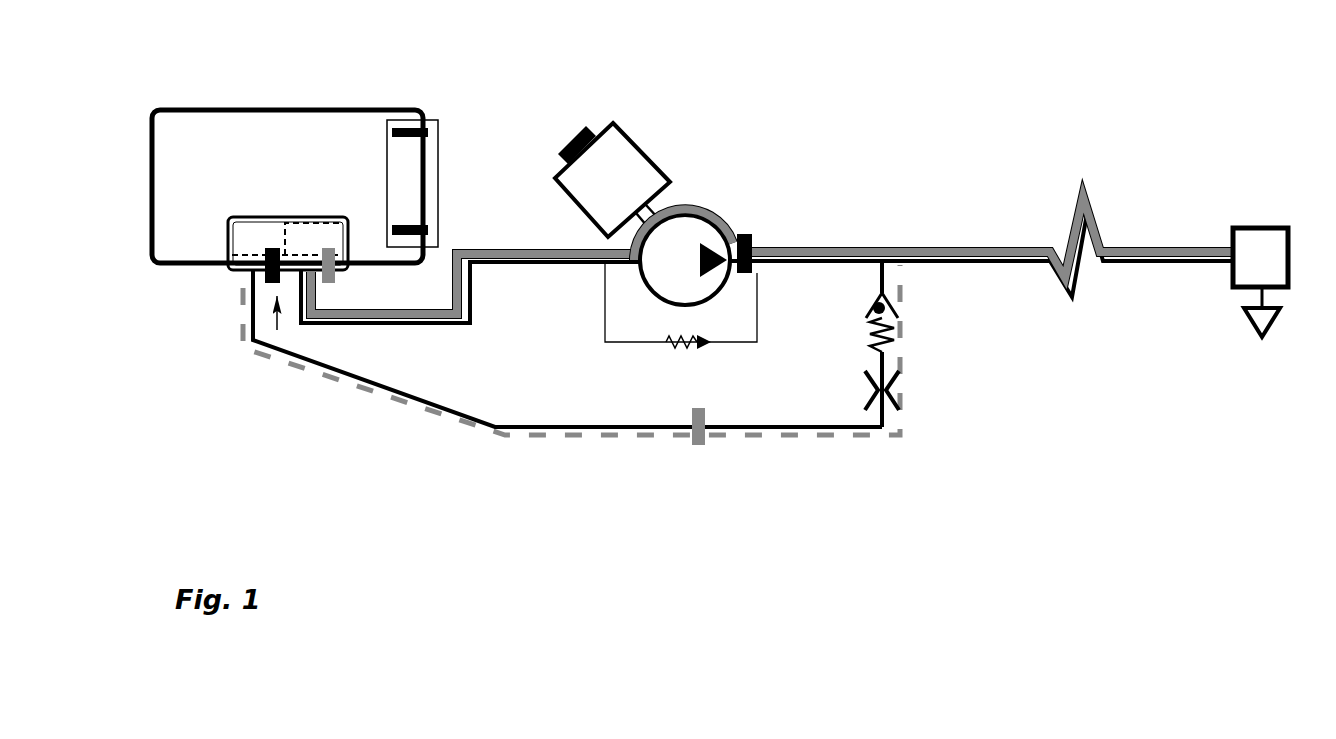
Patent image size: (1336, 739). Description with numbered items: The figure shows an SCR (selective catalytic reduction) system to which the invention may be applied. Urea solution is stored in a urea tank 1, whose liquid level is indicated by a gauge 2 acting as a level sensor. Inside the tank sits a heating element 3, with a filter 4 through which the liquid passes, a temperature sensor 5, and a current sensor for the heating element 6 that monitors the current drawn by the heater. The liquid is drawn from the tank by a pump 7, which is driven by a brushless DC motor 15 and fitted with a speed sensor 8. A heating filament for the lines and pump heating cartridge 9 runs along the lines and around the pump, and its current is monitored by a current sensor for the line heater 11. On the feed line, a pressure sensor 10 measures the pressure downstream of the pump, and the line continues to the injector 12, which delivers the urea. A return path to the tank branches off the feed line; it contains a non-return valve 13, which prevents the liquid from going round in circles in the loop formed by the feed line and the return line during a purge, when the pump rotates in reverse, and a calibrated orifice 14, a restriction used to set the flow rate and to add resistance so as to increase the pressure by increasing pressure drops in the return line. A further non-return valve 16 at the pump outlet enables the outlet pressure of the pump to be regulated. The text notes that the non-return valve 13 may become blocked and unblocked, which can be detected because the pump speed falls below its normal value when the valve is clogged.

The urea tank 1 is at (265, 110).
The gauge 2 is at (442, 198).
The heating element 3 is at (340, 240).
The filter 4 is at (283, 233).
The temperature sensor 5 is at (243, 347).
The current sensor for the heating element 6 is at (337, 280).
The pump 7 is at (718, 290).
The speed sensor 8 is at (590, 116).
The heating filament for the lines and pump heating cartridge 9 is at (737, 220).
The pressure sensor 10 is at (755, 237).
The current sensor for the line heater 11 is at (712, 443).
The injector 12 is at (1266, 228).
The non-return valve 13 is at (895, 327).
The calibrated orifice 14 is at (894, 392).
The motor 15 is at (647, 150).
The non-return valve 16 is at (680, 356).